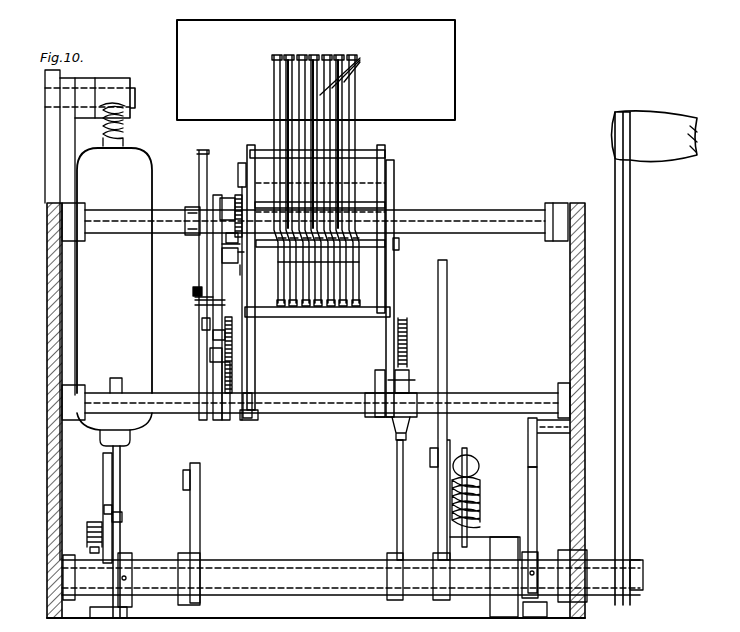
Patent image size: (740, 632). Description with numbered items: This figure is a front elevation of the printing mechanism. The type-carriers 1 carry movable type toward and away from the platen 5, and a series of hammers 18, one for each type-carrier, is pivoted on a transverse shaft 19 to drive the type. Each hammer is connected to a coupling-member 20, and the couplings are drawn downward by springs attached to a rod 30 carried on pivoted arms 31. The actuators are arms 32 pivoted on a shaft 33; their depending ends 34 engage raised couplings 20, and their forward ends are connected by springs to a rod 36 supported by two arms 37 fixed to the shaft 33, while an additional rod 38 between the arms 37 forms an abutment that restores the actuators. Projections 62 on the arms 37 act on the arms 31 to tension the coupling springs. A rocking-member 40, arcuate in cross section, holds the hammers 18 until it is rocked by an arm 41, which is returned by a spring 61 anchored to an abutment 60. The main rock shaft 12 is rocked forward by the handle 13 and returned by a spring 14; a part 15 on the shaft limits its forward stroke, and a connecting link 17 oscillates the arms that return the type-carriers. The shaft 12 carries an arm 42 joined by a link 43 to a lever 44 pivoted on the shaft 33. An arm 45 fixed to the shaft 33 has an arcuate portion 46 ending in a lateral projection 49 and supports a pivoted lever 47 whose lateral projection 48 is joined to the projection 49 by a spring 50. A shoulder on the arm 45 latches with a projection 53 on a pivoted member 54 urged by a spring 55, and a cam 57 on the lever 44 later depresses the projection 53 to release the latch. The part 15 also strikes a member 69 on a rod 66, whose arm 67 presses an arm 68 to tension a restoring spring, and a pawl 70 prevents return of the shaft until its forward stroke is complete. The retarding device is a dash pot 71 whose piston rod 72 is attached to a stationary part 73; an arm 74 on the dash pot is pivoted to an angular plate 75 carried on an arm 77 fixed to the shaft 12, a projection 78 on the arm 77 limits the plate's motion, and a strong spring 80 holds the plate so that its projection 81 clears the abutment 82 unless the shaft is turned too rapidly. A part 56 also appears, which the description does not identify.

The type-carriers 1 is at (316, 165).
The platen 5 is at (278, 58).
The hammers 18 is at (360, 58).
The rock shaft 12 is at (352, 577).
The handle 13 is at (655, 358).
The spring 14 is at (481, 495).
The part 15 is at (400, 474).
The connecting link 17 is at (444, 304).
The shaft 19 is at (238, 172).
The coupling-members 20 is at (330, 268).
The rod 30 is at (358, 314).
The pivoted arms 31 is at (395, 281).
The arms (actuators) 32 is at (327, 244).
The shaft 33 is at (231, 201).
The depending ends 34 is at (241, 268).
The rod 36 is at (365, 152).
The arms 37 is at (251, 147).
The rod 38 is at (386, 206).
The rocking-member 40 is at (383, 247).
The arm 41 is at (239, 255).
The arm 42 is at (190, 506).
The link 43 is at (222, 376).
The lever 44 is at (203, 150).
The arm 45 is at (216, 200).
The arcuate portion 46 is at (213, 335).
The lever 47 is at (226, 240).
The lateral projection 48 is at (196, 288).
The lateral projection 49 is at (197, 302).
The spring 50 is at (194, 294).
The projection 53 is at (210, 354).
The pivoted member 54 is at (243, 410).
The spring 55 is at (227, 350).
The block 56 is at (228, 264).
The cam 57 is at (202, 324).
The abutment 60 is at (222, 248).
The spring 61 is at (243, 208).
The projections 62 is at (400, 243).
The rod 66 is at (360, 400).
The arm 67 is at (376, 374).
The arm 68 is at (386, 336).
The member 69 is at (409, 430).
The pawl 70 is at (528, 433).
The dash pot 71 is at (114, 289).
The piston rod 72 is at (125, 128).
The stationary part 73 is at (131, 100).
The arm 74 is at (128, 442).
The angular plate 75 is at (103, 479).
The arm 77 is at (121, 505).
The projection 78 is at (105, 512).
The spring 80 is at (93, 530).
The projection 81 is at (122, 520).
The abutment 82 is at (110, 598).